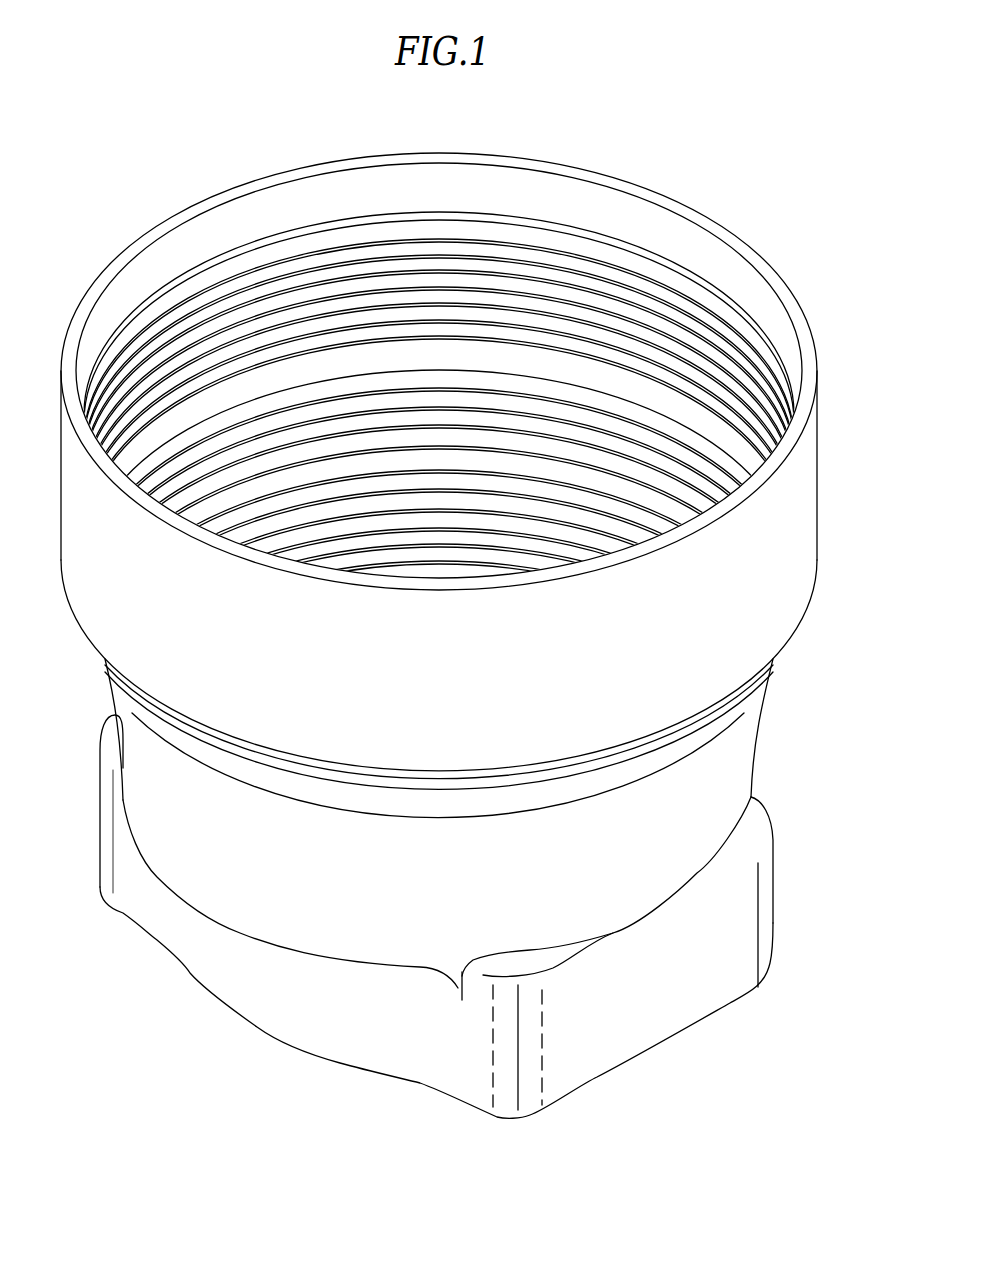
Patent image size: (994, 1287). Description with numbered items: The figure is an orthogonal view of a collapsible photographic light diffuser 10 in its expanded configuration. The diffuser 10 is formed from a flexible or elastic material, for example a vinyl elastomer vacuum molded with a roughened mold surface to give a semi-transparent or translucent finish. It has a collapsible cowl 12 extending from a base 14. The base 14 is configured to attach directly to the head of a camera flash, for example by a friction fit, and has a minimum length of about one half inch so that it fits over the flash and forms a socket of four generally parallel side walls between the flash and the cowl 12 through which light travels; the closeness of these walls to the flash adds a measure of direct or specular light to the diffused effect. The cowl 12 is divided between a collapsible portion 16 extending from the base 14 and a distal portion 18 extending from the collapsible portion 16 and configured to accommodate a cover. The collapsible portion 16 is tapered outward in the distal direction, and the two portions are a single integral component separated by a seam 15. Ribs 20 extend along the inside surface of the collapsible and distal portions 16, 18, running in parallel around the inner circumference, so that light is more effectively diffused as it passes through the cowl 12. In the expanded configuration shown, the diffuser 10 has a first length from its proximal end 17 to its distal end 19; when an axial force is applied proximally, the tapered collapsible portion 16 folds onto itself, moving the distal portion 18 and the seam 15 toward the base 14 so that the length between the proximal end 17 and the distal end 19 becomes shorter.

The photographic light diffuser 10 is at (655, 135).
The collapsible cowl 12 is at (58, 658).
The base 14 is at (723, 912).
The seam 15 is at (765, 673).
The collapsible portion 16 is at (723, 770).
The proximal end 17 is at (610, 1080).
The distal portion 18 is at (776, 494).
The distal end 19 is at (218, 196).
The ribs 20 is at (668, 282).